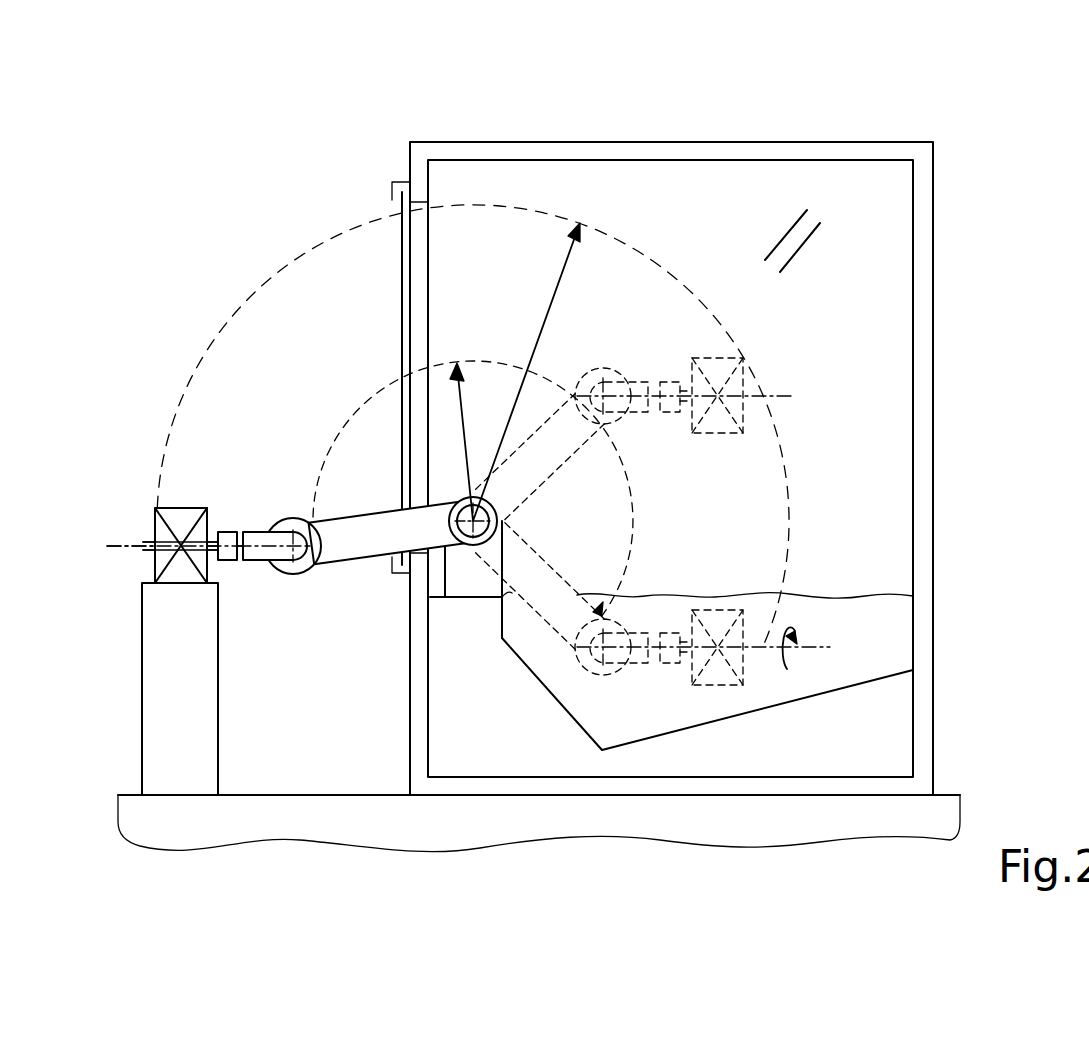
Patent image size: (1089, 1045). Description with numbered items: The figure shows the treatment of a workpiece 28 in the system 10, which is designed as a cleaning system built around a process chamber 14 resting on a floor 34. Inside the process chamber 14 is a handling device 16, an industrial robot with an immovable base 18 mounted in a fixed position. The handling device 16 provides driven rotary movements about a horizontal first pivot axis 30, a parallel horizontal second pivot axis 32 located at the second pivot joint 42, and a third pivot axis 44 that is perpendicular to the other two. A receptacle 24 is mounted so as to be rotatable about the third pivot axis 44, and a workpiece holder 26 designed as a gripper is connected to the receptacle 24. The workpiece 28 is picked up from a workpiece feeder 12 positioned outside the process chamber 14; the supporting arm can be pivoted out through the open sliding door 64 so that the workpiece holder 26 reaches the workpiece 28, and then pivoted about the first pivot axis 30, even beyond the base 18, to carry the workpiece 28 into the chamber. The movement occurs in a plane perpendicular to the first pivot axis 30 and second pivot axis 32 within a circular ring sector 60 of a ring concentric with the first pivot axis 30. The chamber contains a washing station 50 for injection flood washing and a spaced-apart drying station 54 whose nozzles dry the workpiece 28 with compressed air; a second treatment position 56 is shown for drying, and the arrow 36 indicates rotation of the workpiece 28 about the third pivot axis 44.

The system 10 is at (977, 135).
The workpiece feeder 12 is at (158, 764).
The process chamber 14 is at (694, 152).
The handling device 16 is at (352, 560).
The base 18 is at (474, 585).
The receptacle 24 is at (229, 561).
The workpiece holder 26 is at (148, 541).
The workpiece 28 is at (176, 508).
The first pivot axis 30 is at (498, 521).
The second pivot axis 32 is at (288, 518).
The floor 34 is at (283, 795).
The arrow 36 is at (787, 670).
The second pivot joint 42 is at (300, 563).
The third pivot axis 44 is at (106, 549).
The washing station 50 is at (895, 645).
The drying station 54 is at (812, 237).
The second treatment position 56 is at (745, 358).
The circular ring sector 60 is at (341, 260).
The sliding door 64 is at (402, 487).